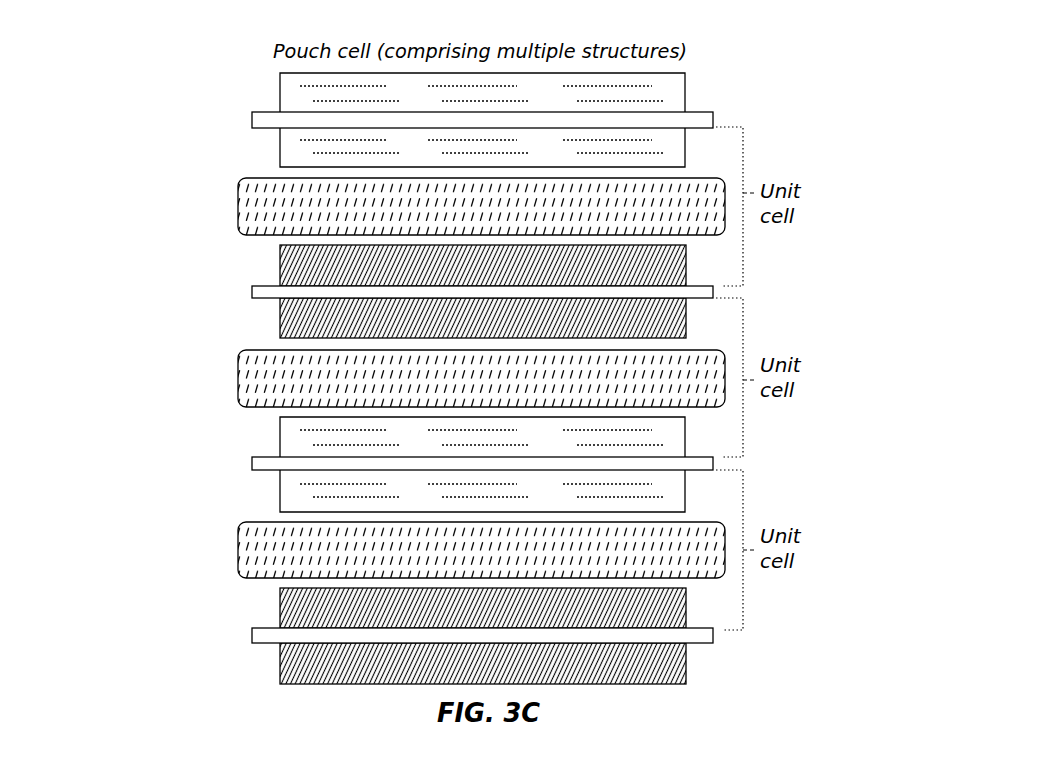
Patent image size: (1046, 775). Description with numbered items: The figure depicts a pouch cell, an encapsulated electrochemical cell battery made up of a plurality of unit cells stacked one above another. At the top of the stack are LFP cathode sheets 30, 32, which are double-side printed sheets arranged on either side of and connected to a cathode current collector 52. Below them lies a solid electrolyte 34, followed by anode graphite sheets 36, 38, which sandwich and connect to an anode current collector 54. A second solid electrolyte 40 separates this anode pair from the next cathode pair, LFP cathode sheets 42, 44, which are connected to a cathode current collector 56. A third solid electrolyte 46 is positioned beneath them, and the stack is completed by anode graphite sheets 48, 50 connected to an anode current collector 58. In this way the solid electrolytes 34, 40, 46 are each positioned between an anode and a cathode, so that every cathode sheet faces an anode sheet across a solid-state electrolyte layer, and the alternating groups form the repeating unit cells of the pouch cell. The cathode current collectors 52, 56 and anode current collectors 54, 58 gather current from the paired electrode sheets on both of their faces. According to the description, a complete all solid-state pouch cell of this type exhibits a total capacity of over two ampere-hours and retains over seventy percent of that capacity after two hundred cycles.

The LFP cathode sheet 30 is at (278, 98).
The LFP cathode sheet 32 is at (278, 147).
The solid electrolyte 34 is at (238, 190).
The anode graphite sheet 36 is at (278, 272).
The anode graphite sheet 38 is at (278, 319).
The solid electrolyte 40 is at (238, 362).
The LFP cathode sheet 42 is at (278, 443).
The LFP cathode sheet 44 is at (278, 492).
The solid electrolyte 46 is at (238, 533).
The anode graphite sheet 48 is at (278, 614).
The anode graphite sheet 50 is at (278, 662).
The cathode current collector 52 is at (700, 113).
The anode current collector 54 is at (700, 286).
The cathode current collector 56 is at (700, 457).
The anode current collector 58 is at (700, 628).